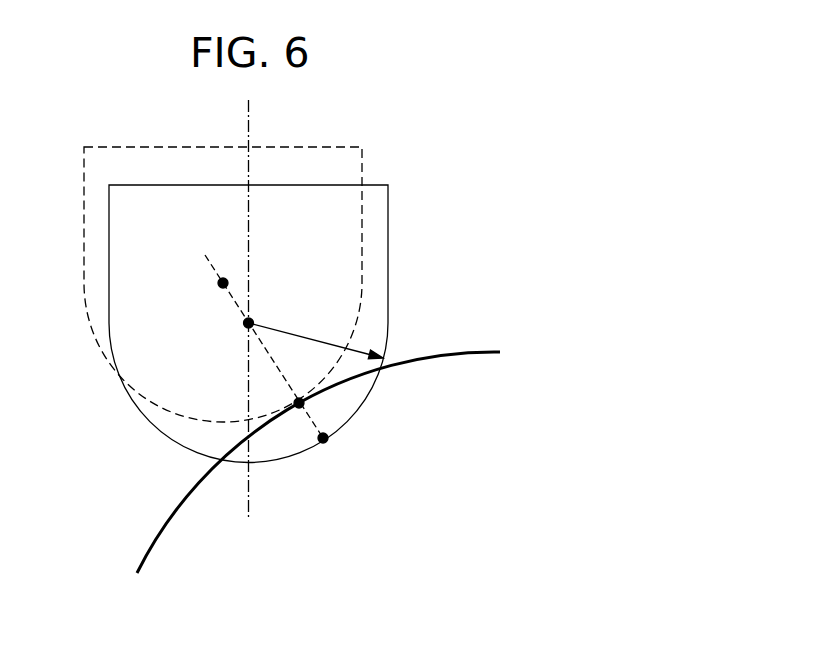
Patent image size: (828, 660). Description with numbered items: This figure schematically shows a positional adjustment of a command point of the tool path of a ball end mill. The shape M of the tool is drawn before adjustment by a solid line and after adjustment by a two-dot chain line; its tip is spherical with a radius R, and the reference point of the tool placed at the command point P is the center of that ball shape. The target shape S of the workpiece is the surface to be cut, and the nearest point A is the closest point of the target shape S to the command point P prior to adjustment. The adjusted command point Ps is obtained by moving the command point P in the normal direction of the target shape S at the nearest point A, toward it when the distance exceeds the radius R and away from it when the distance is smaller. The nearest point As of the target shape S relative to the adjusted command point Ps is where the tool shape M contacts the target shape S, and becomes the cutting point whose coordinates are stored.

The shape of the tool M is at (363, 170).
The command point after adjustment Ps is at (226, 280).
The command point P is at (252, 320).
The radius of the ball shape of the tool tip R is at (316, 338).
The target shape S is at (179, 511).
The nearest point of the target shape relative to the adjusted command point As is at (304, 404).
The nearest point of the target shape A is at (328, 440).